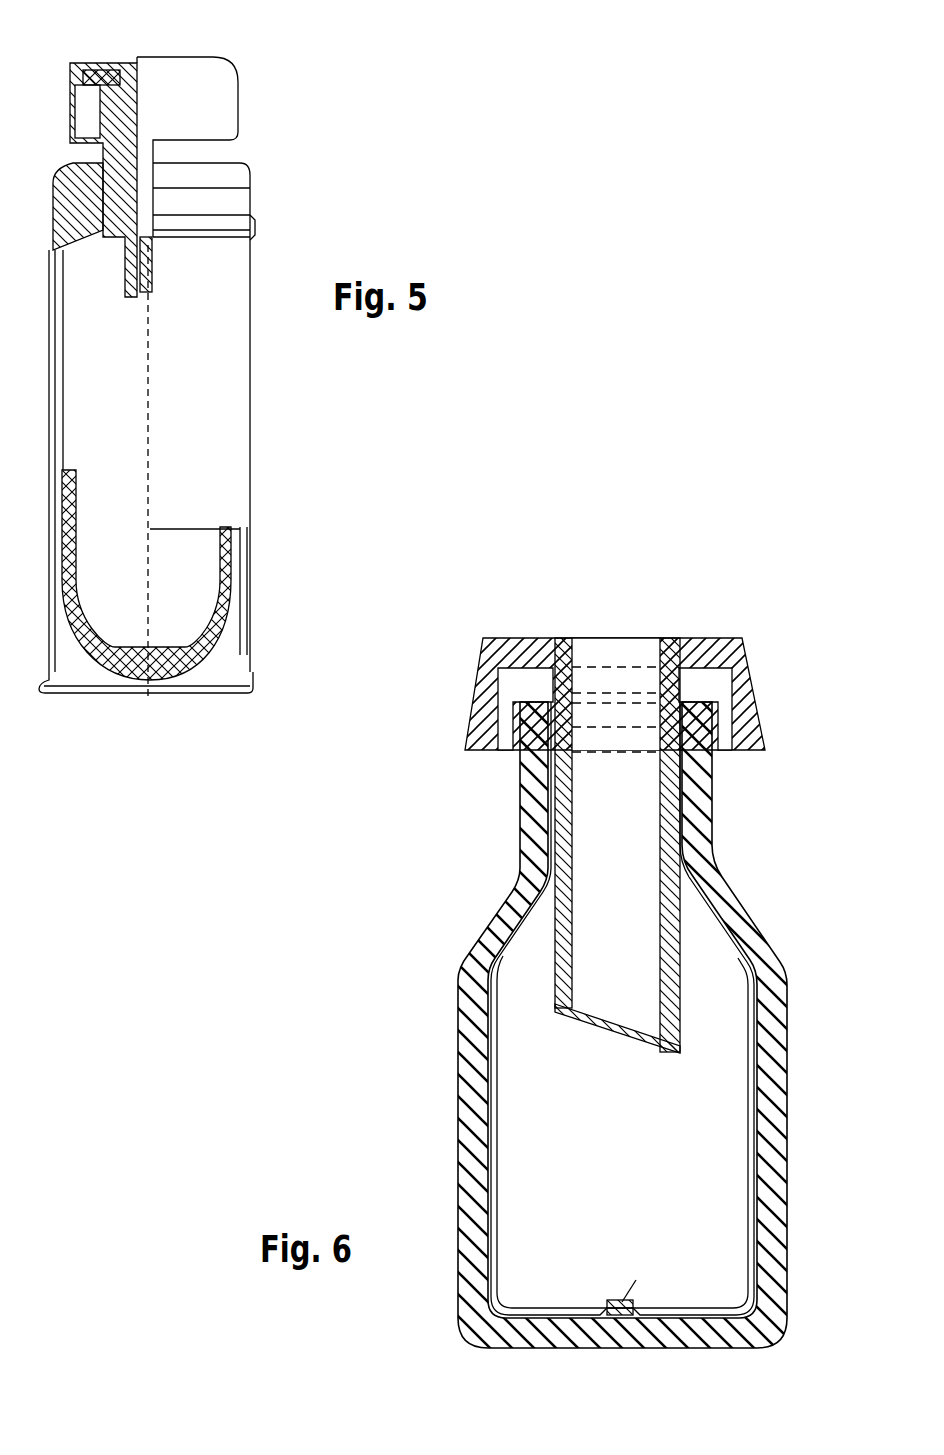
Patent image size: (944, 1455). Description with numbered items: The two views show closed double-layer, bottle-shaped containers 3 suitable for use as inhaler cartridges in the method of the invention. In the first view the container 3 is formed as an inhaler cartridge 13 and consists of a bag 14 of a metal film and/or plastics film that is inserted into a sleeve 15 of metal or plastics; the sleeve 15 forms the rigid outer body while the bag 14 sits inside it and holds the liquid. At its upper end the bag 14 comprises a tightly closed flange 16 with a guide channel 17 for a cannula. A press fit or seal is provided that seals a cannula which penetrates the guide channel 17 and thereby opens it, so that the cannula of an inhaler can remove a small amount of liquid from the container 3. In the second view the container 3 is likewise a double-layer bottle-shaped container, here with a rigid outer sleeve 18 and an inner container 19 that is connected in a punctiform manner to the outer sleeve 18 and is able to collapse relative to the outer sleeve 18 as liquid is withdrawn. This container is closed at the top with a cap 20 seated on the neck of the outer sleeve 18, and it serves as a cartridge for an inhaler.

In FIG. 5, the container 3 is at (276, 198).
In FIG. 6, the container 3 is at (457, 1097).
In FIG. 5, the inhaler cartridge 13 is at (251, 382).
In FIG. 5, the bag 14 is at (188, 560).
In FIG. 5, the sleeve 15 is at (216, 697).
In FIG. 5, the flange 16 is at (104, 66).
In FIG. 5, the guide channel 17 is at (142, 88).
In FIG. 6, the rigid outer sleeve 18 is at (768, 1003).
In FIG. 6, the inner container 19 is at (748, 1222).
In FIG. 6, the cap 20 is at (742, 661).